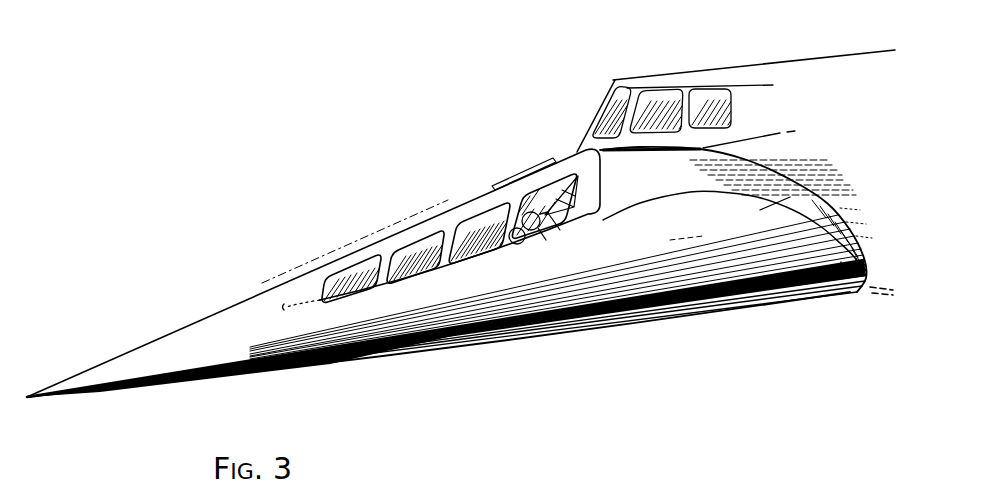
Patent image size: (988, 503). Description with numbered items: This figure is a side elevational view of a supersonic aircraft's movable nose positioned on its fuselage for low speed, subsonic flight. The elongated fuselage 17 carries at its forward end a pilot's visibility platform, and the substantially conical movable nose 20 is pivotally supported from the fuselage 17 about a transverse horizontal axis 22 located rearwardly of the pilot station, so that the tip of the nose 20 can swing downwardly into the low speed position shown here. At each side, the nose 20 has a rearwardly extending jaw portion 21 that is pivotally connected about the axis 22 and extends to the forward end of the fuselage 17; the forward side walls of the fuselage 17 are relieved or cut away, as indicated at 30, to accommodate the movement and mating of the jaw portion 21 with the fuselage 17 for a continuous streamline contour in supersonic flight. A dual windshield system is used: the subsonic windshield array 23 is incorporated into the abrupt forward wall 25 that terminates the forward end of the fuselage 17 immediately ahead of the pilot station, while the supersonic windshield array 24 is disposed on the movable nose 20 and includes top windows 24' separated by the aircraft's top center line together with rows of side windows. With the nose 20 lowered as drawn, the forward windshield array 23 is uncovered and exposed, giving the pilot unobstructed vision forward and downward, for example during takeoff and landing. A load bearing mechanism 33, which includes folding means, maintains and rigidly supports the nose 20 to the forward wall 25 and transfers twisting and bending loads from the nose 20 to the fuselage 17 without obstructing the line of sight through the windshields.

The fuselage 17 is at (710, 67).
The movable nose 20 is at (172, 332).
The jaw portion 21 is at (760, 303).
The axis 22 is at (842, 289).
The windshield array 23 is at (603, 104).
The windshield array 24 is at (420, 229).
The canopy vent slit 24' is at (518, 153).
The forward wall 25 is at (568, 168).
The relieved side walls 30 is at (663, 188).
The load bearing mechanism 33 is at (553, 229).